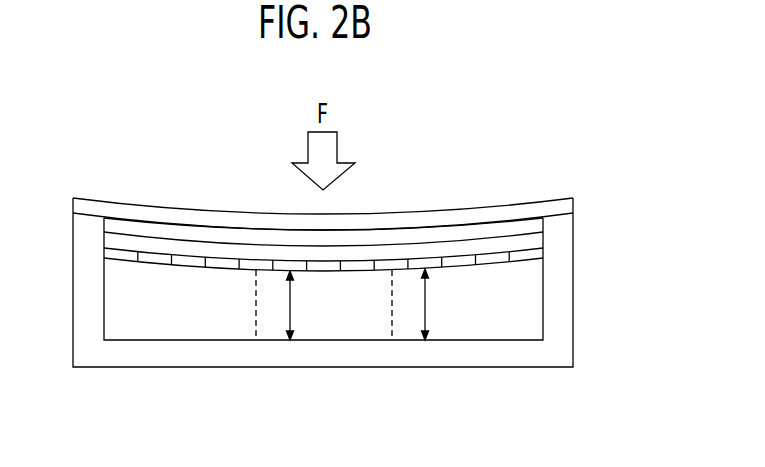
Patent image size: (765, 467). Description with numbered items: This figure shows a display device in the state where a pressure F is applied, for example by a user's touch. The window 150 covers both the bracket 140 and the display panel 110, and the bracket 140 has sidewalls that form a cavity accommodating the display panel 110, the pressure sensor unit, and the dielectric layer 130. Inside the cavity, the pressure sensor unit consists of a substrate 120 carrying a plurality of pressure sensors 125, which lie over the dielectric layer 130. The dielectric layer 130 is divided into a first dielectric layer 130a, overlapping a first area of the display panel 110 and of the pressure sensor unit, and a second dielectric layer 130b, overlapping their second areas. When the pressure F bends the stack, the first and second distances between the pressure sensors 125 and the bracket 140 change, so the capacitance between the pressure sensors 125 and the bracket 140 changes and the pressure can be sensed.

The display panel 110 is at (538, 222).
The substrate 120 is at (538, 240).
The pressure sensors 125 is at (533, 257).
The dielectric layer 130 is at (530, 313).
The first dielectric layer 130a is at (355, 318).
The second dielectric layer 130b is at (493, 318).
The bracket 140 is at (558, 357).
The window 150 is at (563, 207).